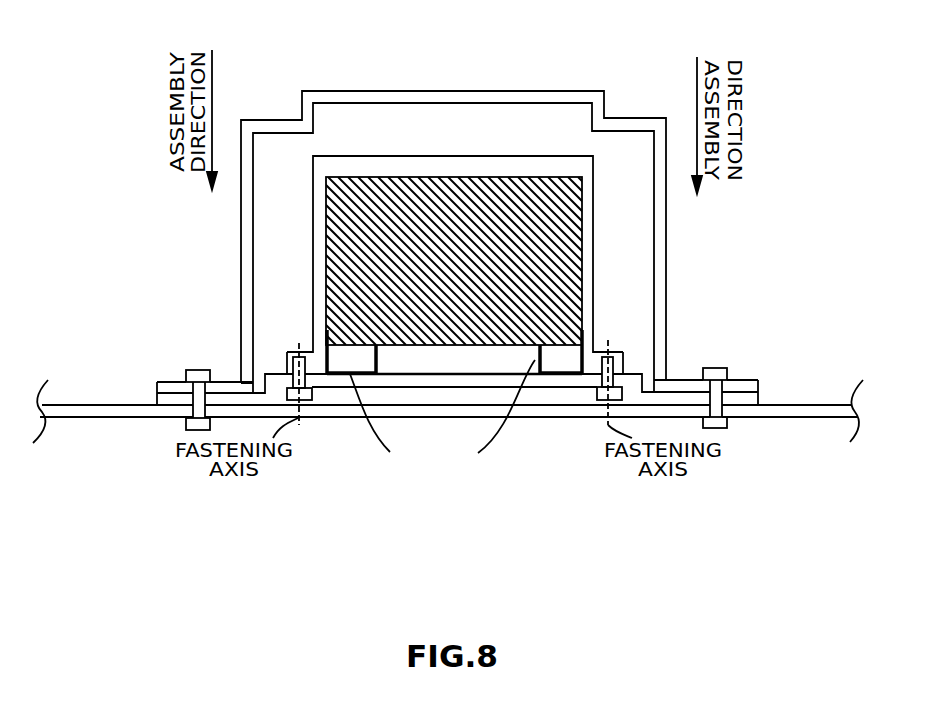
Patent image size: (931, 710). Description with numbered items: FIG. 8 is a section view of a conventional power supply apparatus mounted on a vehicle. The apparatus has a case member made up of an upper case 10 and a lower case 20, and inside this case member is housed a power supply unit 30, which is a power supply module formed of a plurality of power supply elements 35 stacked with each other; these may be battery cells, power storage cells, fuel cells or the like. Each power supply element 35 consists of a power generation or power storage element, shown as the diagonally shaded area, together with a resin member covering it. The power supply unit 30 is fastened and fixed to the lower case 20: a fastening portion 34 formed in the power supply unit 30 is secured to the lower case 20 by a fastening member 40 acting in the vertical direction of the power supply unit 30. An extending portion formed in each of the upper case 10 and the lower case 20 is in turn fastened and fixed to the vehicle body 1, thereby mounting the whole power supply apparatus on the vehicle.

The vehicle body 1 is at (110, 413).
The upper case 10 is at (163, 402).
The lower case 20 is at (167, 387).
The power supply unit 30 is at (430, 150).
The fastening portion 34 is at (288, 353).
The power supply element 35 is at (455, 357).
The fastening member 40 is at (312, 398).